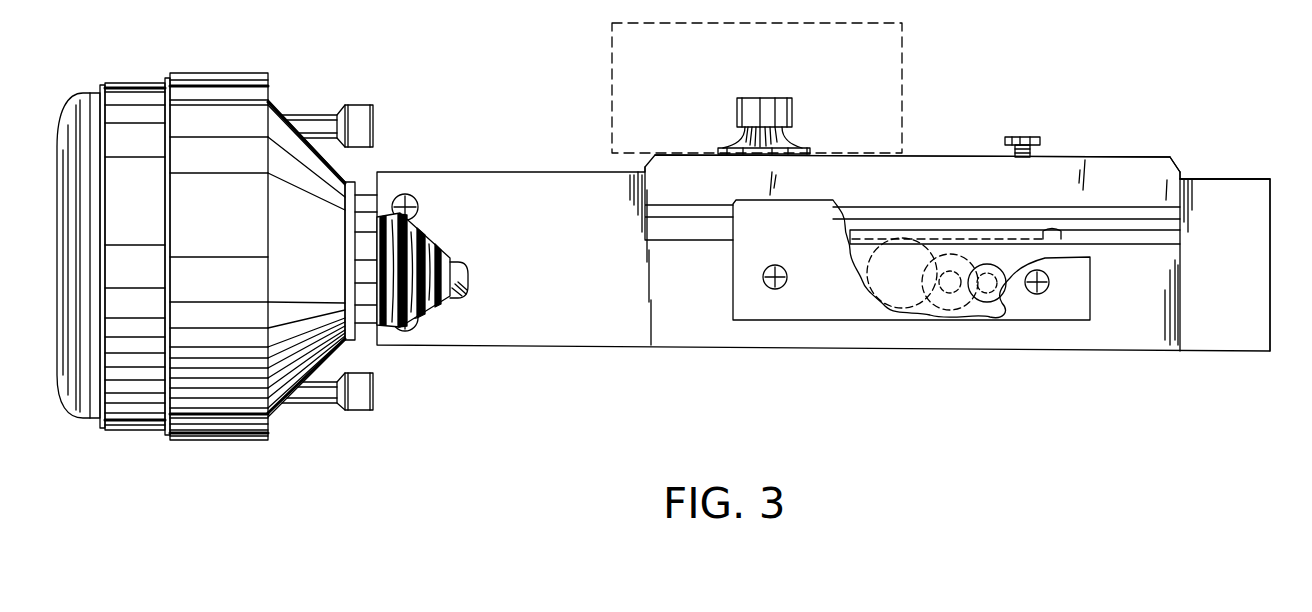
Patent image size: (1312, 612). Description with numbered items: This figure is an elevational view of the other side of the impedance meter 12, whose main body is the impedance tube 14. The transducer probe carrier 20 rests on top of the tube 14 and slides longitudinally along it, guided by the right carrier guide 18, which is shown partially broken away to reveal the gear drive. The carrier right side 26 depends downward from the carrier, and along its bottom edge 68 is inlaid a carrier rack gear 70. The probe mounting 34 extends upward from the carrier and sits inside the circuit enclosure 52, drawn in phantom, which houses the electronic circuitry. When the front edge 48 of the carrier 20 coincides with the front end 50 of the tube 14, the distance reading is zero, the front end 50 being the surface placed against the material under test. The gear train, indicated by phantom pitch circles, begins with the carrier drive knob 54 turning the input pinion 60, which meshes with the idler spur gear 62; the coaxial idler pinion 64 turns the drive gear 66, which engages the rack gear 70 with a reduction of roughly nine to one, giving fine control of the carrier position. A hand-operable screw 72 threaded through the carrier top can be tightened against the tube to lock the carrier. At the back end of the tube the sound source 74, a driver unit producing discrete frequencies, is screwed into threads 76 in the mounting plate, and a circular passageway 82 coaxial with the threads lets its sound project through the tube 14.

The impedance meter 12 is at (1232, 176).
The impedance tube 14 is at (545, 347).
The right carrier guide 18 is at (733, 298).
The transducer probe carrier 20 is at (1148, 122).
The carrier right side 26 is at (655, 190).
The probe mounting 34 is at (790, 146).
The front edge 48 is at (1183, 170).
The front end 50 is at (1271, 216).
The circuit enclosure 52 is at (612, 85).
The carrier drive knob 54 is at (1008, 300).
The input pinion 60 is at (1004, 264).
The idler spur gear 62 is at (946, 322).
The idler pinion 64 is at (958, 254).
The drive gear 66 is at (876, 266).
The bottom edge 68 is at (1130, 235).
The carrier rack gear 70 is at (1060, 232).
The hand-operable screw 72 is at (1049, 109).
The sound source 74 is at (208, 73).
The threads 76 is at (430, 311).
The circular passageway 82 is at (470, 289).